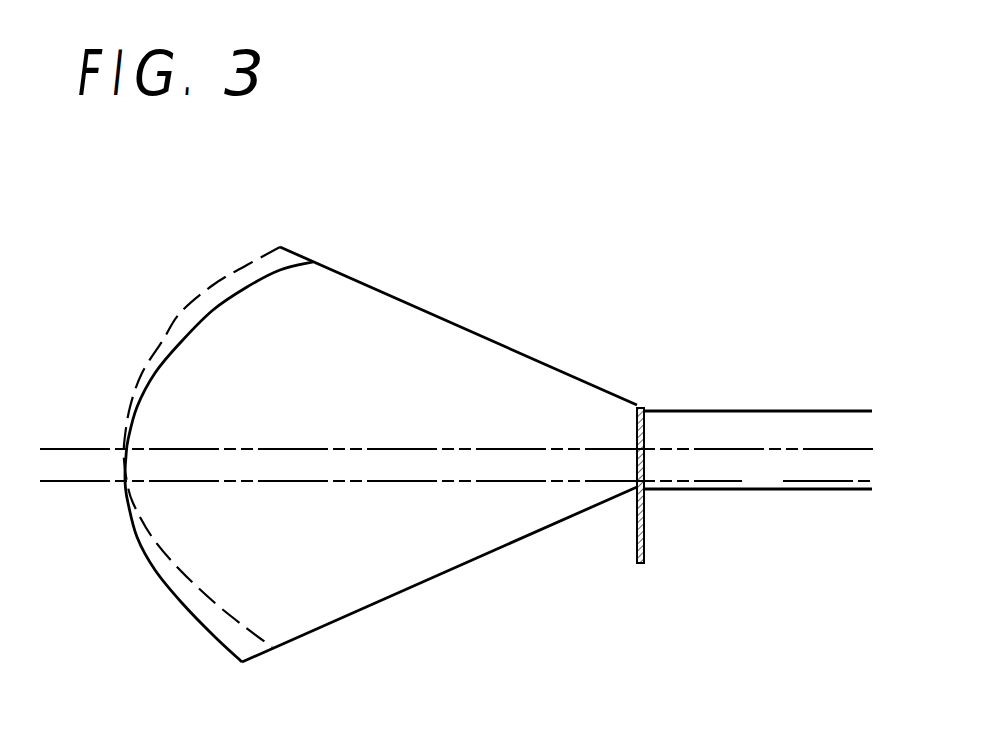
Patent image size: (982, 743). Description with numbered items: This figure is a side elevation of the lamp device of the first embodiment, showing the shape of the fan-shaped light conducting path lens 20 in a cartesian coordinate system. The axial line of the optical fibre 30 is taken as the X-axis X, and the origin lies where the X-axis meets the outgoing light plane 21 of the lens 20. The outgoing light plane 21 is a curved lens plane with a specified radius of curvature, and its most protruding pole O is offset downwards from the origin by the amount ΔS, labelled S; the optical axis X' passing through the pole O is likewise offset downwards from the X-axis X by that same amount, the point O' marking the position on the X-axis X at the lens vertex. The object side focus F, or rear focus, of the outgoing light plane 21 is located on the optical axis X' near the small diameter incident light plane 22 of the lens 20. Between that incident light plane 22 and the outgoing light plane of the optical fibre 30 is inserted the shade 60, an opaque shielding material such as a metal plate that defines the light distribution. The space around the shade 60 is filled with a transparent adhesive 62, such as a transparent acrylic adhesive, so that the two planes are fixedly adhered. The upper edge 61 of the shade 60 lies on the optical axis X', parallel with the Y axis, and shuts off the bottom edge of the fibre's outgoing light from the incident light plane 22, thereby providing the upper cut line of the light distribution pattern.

The light conducting path lens 20 is at (498, 358).
The outgoing light plane 21 is at (168, 358).
The incident light plane 22 is at (640, 413).
The optical fibre 30 is at (845, 489).
The shade 60 is at (643, 561).
The upper edge of shade 61 is at (642, 482).
The transparent adhesive 62 is at (643, 428).
The object side focus F is at (637, 483).
The pole O is at (101, 508).
The center of reference sphere O' is at (100, 427).
The X-axis X is at (467, 451).
The optical axis X' is at (456, 483).
The offset Δ S is at (683, 417).